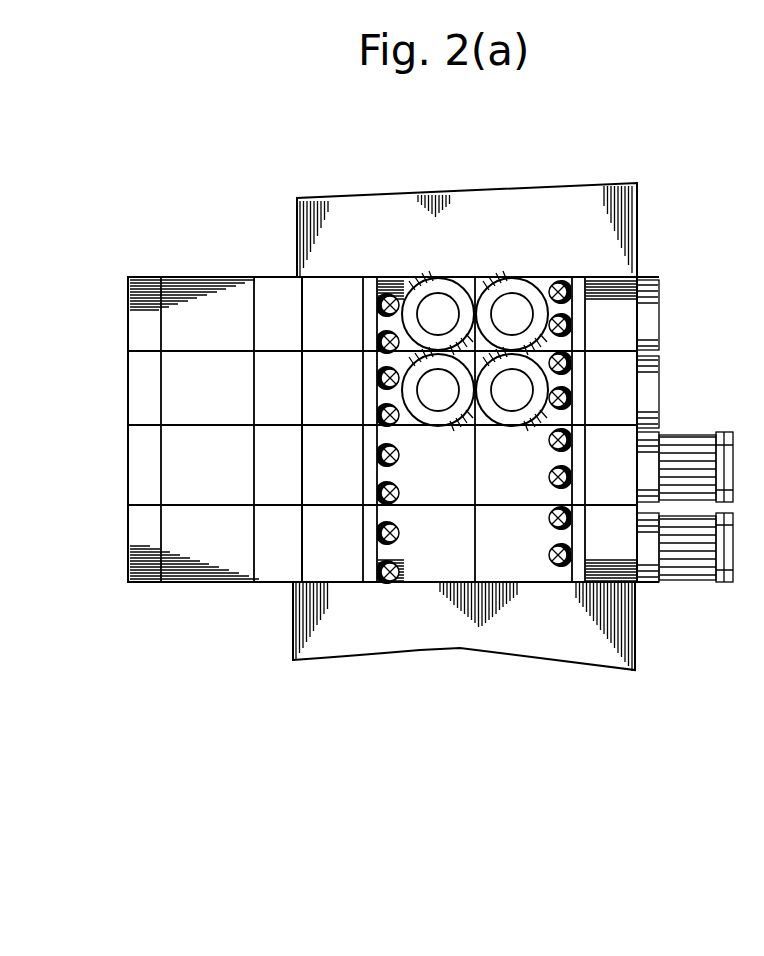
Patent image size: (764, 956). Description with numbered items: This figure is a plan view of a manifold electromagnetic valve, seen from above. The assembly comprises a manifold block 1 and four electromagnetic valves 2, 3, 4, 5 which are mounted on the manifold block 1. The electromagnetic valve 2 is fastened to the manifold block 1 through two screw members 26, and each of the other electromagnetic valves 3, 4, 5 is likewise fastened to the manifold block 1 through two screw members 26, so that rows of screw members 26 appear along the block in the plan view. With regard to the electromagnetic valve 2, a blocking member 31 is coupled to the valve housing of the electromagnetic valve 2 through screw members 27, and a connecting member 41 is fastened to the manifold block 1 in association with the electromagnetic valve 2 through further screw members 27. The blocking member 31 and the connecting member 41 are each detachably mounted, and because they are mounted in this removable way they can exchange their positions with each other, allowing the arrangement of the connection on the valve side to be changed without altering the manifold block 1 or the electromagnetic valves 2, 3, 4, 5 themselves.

The manifold block 1 is at (612, 232).
The electromagnetic valve 2 is at (193, 565).
The electromagnetic valve 3 is at (180, 470).
The electromagnetic valve 4 is at (150, 388).
The electromagnetic valve 5 is at (205, 302).
The screw member 26 is at (375, 417).
The screw member 27 is at (396, 536).
The blocking member 31 is at (437, 490).
The connecting member 41 is at (480, 357).